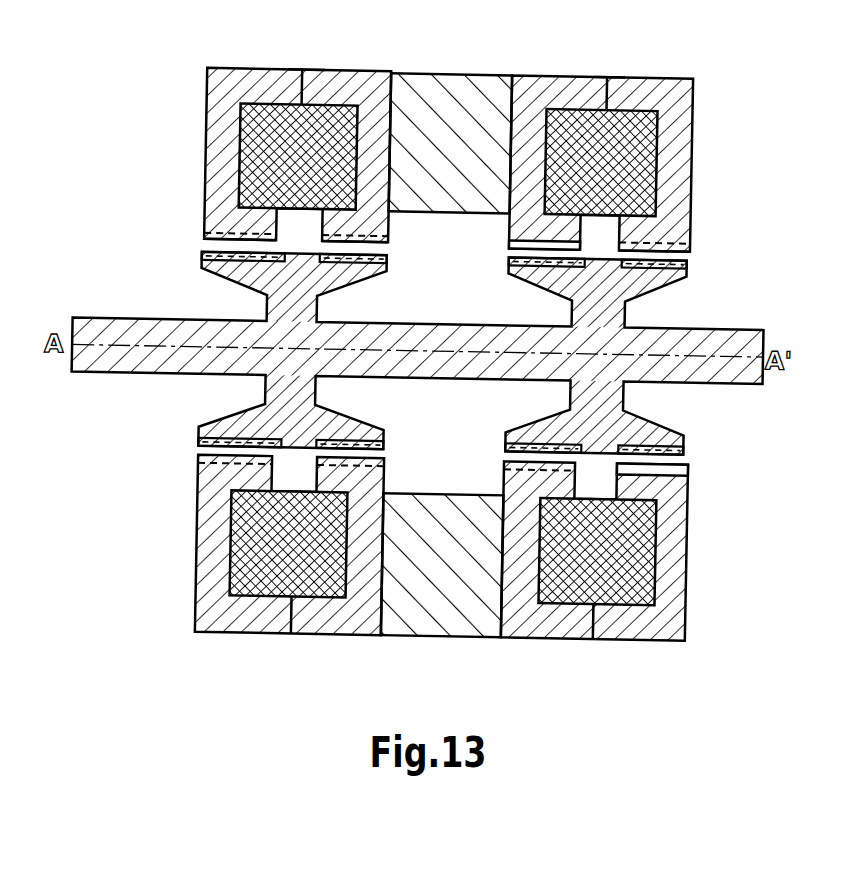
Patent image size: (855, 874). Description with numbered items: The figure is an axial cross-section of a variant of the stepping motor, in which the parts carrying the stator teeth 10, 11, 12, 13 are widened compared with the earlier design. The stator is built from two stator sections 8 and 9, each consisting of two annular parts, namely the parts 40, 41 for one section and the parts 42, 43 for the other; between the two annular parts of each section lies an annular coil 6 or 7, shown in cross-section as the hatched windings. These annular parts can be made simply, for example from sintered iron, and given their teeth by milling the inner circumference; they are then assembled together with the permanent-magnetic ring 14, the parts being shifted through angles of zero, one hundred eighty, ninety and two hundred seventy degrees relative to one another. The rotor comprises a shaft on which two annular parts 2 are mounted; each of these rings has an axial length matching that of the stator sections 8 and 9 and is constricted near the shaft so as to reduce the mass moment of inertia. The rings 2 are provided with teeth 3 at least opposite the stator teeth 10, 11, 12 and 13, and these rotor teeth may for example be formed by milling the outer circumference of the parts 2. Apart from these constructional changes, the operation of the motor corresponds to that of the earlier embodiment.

The annular parts 2 is at (344, 282).
The teeth 3 is at (200, 259).
The annular coil 6 is at (636, 118).
The annular coil 7 is at (248, 131).
The stator section 8 is at (608, 79).
The stator section 9 is at (313, 78).
The stator tooth 10 is at (688, 240).
The stator tooth 11 is at (510, 239).
The stator tooth 12 is at (386, 241).
The stator tooth 13 is at (203, 244).
The permanent-magnetic ring 14 is at (450, 78).
The annular part 40 is at (663, 77).
The annular part 41 is at (548, 77).
The annular part 42 is at (367, 78).
The annular part 43 is at (235, 76).